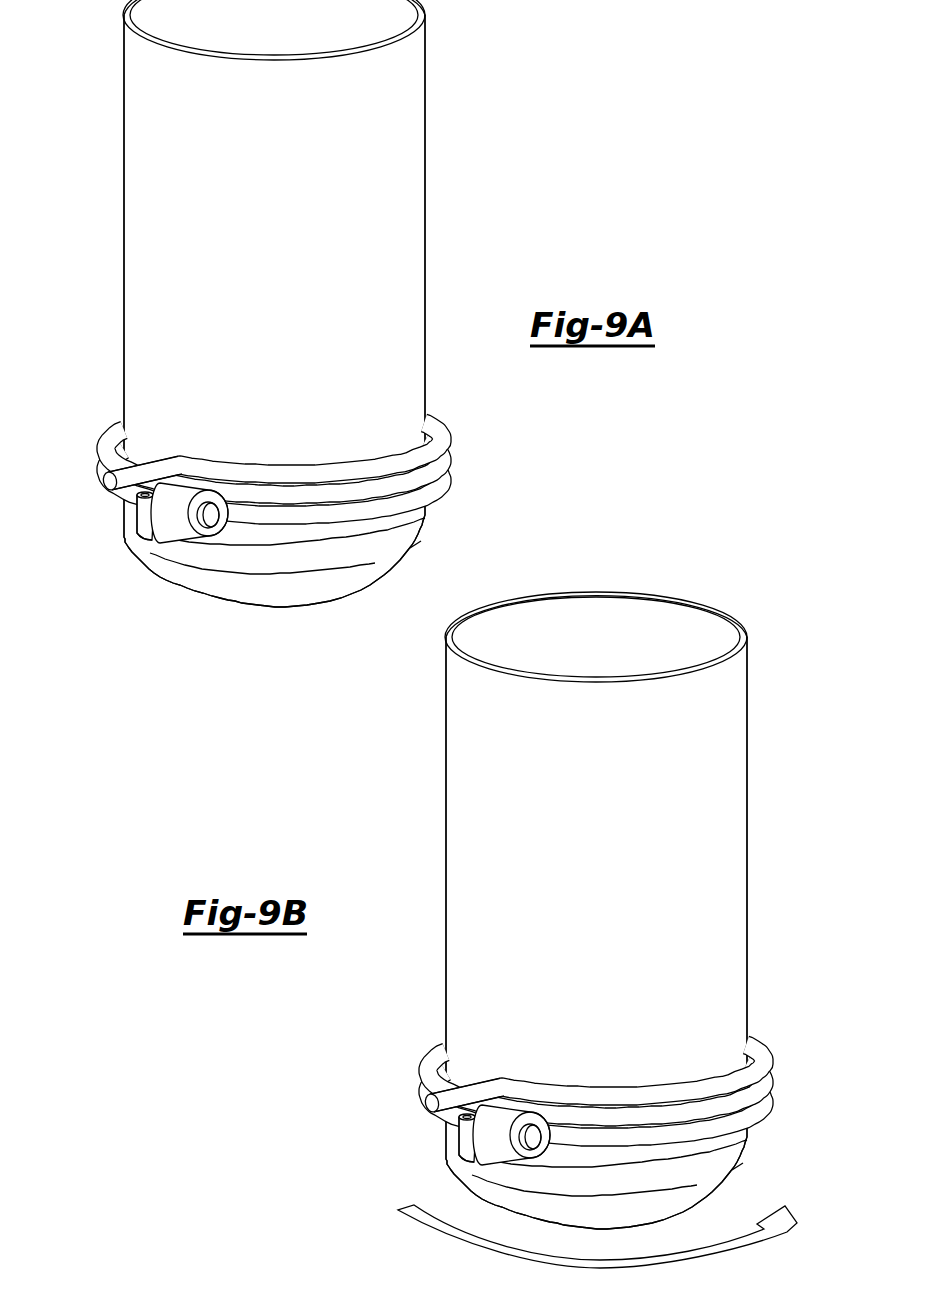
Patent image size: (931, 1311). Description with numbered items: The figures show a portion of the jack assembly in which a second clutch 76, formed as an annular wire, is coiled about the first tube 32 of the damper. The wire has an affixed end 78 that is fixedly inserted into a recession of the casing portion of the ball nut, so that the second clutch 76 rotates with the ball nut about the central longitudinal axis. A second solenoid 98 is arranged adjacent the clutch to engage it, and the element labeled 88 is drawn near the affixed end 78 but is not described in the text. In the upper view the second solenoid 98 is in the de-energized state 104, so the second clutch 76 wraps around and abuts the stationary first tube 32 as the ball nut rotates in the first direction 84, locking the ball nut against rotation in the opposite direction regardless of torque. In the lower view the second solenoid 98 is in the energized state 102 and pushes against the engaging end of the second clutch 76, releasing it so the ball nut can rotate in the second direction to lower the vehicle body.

In FIG. 9A, the first tube 32 is at (425, 92).
In FIG. 9B, the first tube 32 is at (636, 910).
In FIG. 9A, the second clutch 76 is at (443, 475).
In FIG. 9B, the second clutch 76 is at (633, 1091).
In FIG. 9A, the affixed end 78 is at (103, 482).
In FIG. 9B, the affixed end 78 is at (430, 1087).
In FIG. 9A, the post 88 is at (144, 505).
In FIG. 9B, the post 88 is at (418, 1138).
In FIG. 9A, the second solenoid 98 is at (172, 522).
In FIG. 9B, the second solenoid 98 is at (479, 1152).
In FIG. 9A, the de-energized state 104 is at (188, 565).
In FIG. 9B, the energized state 102 is at (500, 1181).
In FIG. 9B, the first direction 84 is at (740, 1252).